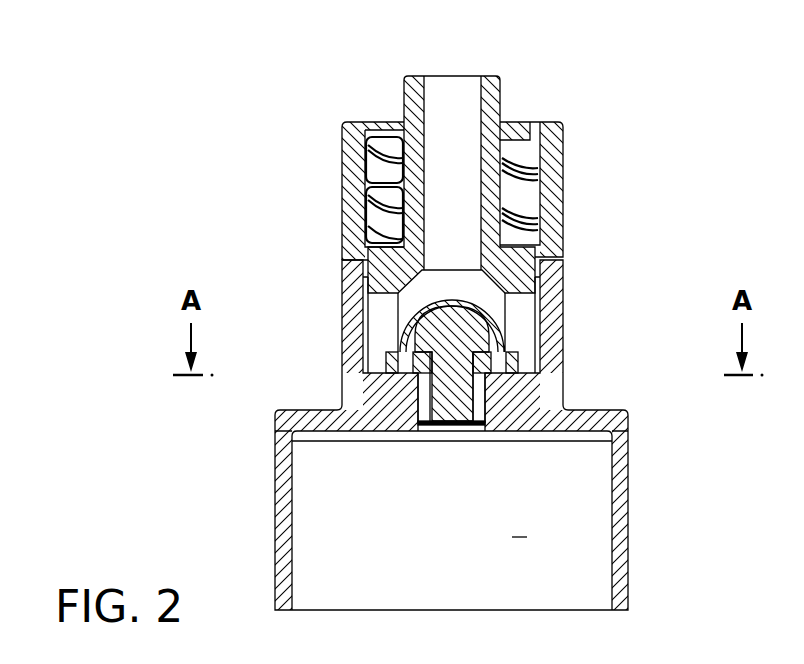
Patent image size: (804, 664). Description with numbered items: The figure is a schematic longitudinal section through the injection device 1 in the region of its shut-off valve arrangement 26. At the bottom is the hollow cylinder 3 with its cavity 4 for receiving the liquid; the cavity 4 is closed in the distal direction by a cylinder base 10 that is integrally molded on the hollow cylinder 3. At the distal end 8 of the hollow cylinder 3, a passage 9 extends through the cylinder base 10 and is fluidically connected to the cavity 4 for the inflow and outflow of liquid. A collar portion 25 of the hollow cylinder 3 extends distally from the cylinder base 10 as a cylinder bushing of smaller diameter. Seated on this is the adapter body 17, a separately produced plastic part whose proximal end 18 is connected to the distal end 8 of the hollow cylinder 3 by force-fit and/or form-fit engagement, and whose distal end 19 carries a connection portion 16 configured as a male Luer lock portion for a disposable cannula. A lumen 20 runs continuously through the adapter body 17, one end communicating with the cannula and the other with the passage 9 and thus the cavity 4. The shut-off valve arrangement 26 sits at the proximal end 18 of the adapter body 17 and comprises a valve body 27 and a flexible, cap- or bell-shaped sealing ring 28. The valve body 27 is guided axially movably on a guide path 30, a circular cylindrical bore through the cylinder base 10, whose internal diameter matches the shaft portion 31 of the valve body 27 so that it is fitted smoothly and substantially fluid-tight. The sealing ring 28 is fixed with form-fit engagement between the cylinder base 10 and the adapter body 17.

The injection device 1 is at (273, 90).
The hollow cylinder 3 is at (275, 515).
The cavity 4 is at (519, 523).
The distal end 8 is at (625, 383).
The passage 9 is at (420, 428).
The cylinder base 10 is at (300, 424).
The connection portion 16 is at (405, 113).
The adapter body 17 is at (297, 227).
The proximal end 18 is at (600, 272).
The distal end 19 is at (340, 125).
The lumen 20 is at (470, 103).
The collar portion 25 is at (513, 322).
The shut-off valve arrangement 26 is at (525, 338).
The valve body 27 is at (396, 342).
The sealing ring 28 is at (520, 360).
The guide path 30 is at (425, 415).
The shaft portion 31 is at (418, 388).